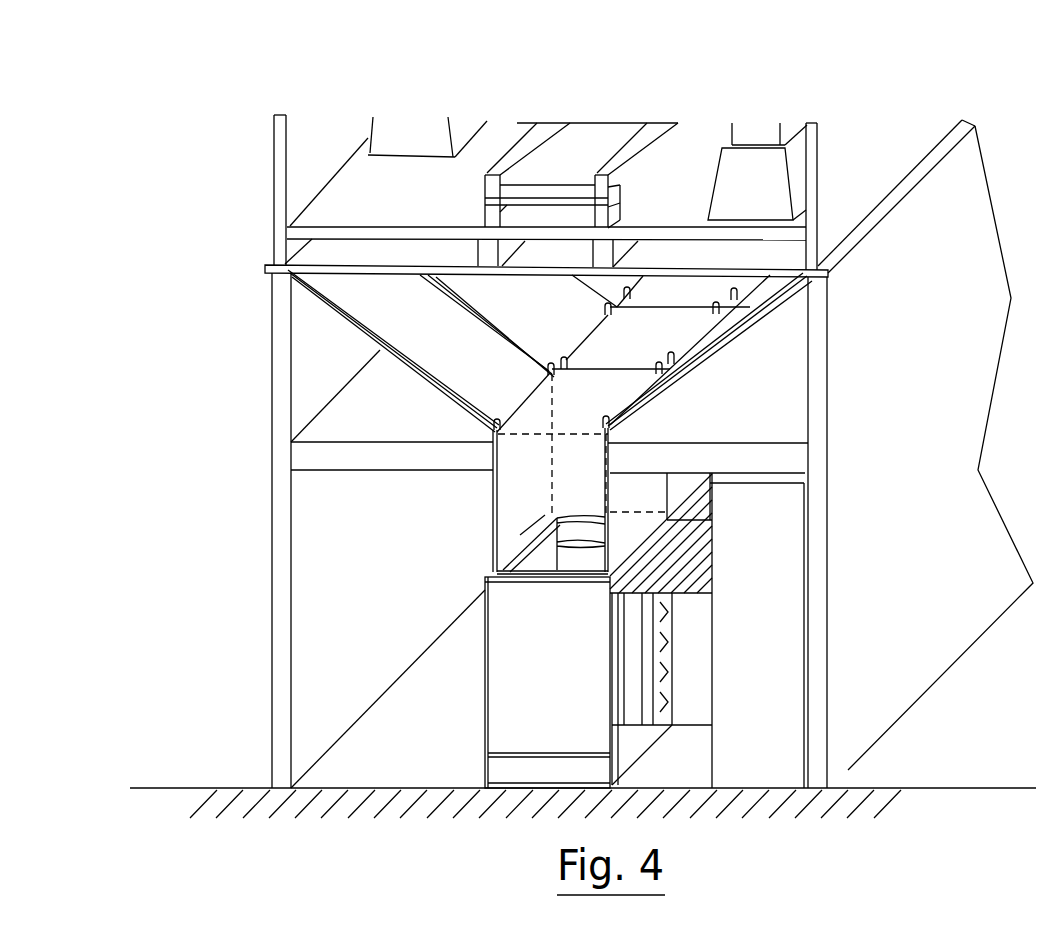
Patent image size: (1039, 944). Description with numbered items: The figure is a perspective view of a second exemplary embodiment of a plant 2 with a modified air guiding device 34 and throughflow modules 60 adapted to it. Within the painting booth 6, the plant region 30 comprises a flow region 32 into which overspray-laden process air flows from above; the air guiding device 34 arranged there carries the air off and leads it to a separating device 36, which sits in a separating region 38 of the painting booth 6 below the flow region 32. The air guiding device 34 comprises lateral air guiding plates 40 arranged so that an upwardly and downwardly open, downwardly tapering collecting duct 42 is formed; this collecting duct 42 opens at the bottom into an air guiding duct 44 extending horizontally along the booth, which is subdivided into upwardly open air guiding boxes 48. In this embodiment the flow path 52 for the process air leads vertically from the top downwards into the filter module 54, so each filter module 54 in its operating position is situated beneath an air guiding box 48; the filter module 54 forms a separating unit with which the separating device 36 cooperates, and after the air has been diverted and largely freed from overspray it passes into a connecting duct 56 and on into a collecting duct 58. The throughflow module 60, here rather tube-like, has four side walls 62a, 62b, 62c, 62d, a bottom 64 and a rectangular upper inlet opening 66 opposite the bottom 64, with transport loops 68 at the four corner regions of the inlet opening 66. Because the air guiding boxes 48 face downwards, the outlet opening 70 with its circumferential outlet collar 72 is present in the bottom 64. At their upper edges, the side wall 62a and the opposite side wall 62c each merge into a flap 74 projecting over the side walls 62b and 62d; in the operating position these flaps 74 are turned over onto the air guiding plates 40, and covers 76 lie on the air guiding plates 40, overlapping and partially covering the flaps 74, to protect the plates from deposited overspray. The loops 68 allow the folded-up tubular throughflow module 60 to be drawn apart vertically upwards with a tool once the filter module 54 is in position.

The plant 2 is at (245, 97).
The painting booth 6 is at (907, 122).
The plant region 30 is at (195, 546).
The flow region 32 is at (298, 373).
The air guiding device 34 is at (642, 426).
The separating device 36 is at (646, 749).
The separating region 38 is at (315, 667).
The air guiding plates 40 is at (300, 283).
The collecting duct 42 is at (558, 310).
The air guiding duct 44 is at (630, 385).
The air guiding boxes 48 is at (478, 487).
The flow path 52 is at (495, 358).
The filter module 54 is at (505, 745).
The connecting duct 56 is at (693, 715).
The collecting duct 58 is at (780, 668).
The throughflow module 60 is at (478, 549).
The side wall 62a is at (530, 419).
The side wall 62b is at (607, 389).
The side wall 62c is at (633, 496).
The side wall 62d is at (500, 512).
The bottom 64 is at (590, 575).
The inlet opening 66 is at (576, 370).
The transport loops 68 is at (545, 365).
The outlet opening 70 is at (552, 520).
The outlet collar 72 is at (535, 553).
The flap 74 is at (480, 441).
The covers 76 is at (400, 340).